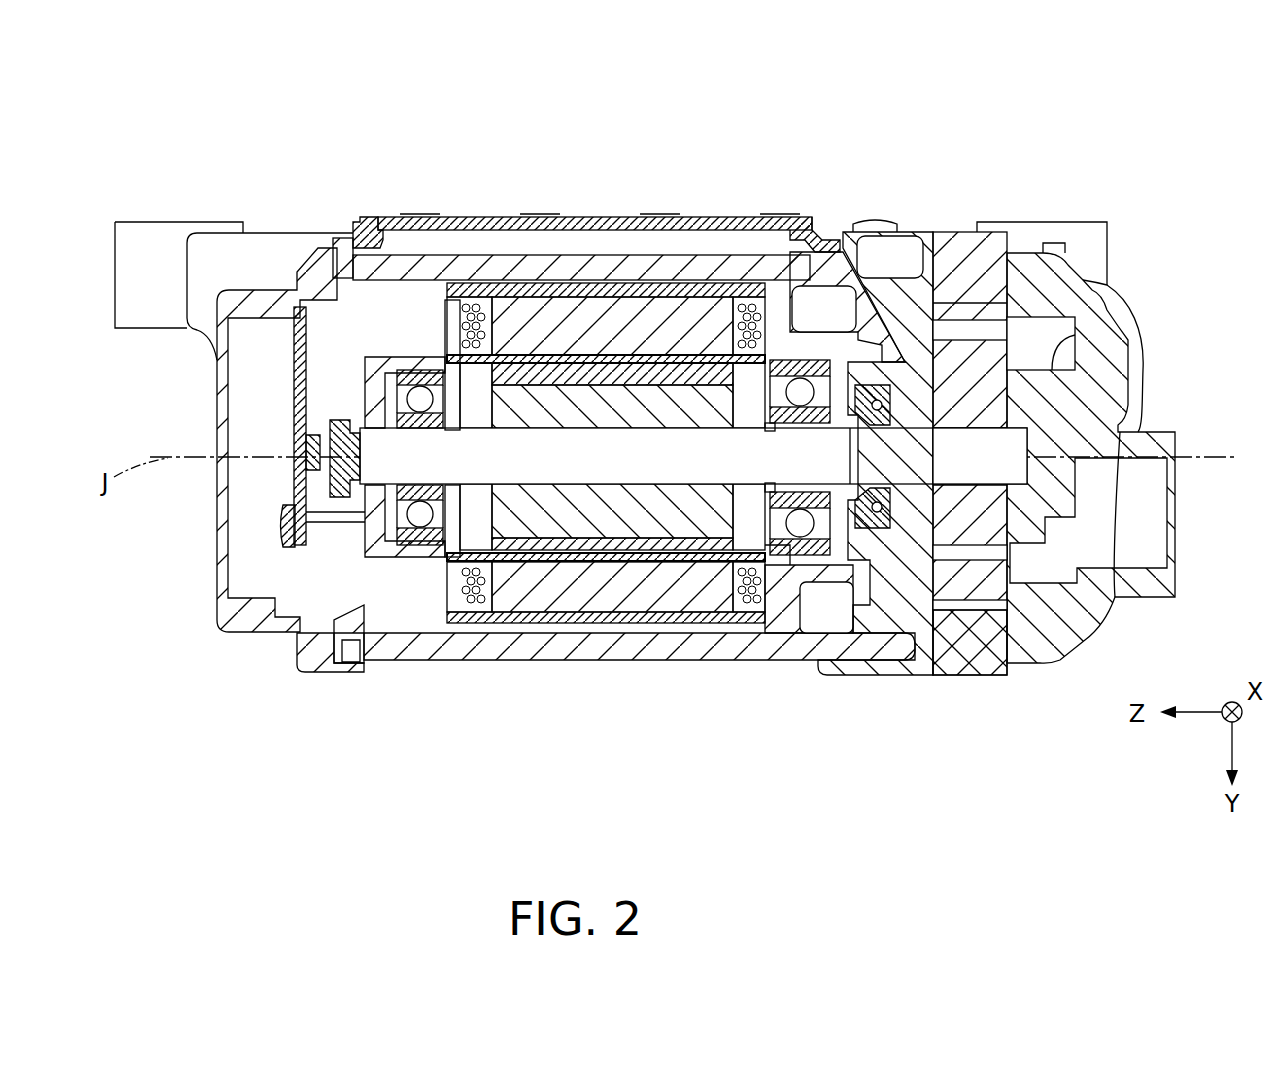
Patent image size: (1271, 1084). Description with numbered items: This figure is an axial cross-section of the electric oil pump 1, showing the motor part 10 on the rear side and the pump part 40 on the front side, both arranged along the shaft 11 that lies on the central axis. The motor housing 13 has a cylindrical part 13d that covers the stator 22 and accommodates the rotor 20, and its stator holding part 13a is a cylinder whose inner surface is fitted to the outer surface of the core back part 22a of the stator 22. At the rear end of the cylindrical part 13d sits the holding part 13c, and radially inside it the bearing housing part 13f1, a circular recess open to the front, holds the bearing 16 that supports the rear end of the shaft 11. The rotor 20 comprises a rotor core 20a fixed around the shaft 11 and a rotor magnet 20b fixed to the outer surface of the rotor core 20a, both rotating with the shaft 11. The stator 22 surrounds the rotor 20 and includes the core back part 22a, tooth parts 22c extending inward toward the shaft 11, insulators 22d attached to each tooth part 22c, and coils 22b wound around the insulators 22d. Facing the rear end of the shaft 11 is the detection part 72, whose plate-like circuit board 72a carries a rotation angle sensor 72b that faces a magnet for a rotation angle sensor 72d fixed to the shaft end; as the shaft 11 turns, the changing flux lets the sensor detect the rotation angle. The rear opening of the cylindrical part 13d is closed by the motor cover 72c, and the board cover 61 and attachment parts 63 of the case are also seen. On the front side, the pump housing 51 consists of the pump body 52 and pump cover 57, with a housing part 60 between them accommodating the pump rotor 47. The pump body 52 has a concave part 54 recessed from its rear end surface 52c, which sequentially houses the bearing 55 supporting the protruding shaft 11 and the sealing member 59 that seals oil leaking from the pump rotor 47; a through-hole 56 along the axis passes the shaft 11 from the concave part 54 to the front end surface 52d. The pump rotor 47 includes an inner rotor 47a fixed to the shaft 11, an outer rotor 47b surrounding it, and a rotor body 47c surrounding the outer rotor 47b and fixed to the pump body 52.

The electric oil pump 1 is at (1133, 135).
The motor part 10 is at (602, 703).
The shaft 11 is at (903, 440).
The motor housing 13 is at (445, 660).
The stator holding part 13a is at (582, 660).
The holding part 13c is at (408, 660).
The cylindrical part 13d is at (505, 262).
The bearing housing part 13f1 is at (370, 660).
The bearing 16 is at (425, 512).
The rotor 20 is at (638, 402).
The rotor core 20a is at (572, 400).
The rotor magnet 20b is at (688, 378).
The stator 22 is at (648, 606).
The core back part 22a is at (553, 640).
The coil 22b is at (745, 605).
The tooth part 22c is at (690, 600).
The insulator 22d is at (515, 630).
The pump part 40 is at (994, 708).
The pump rotor 47 is at (1018, 618).
The inner rotor 47a is at (1045, 532).
The outer rotor 47b is at (974, 600).
The rotor body 47c is at (945, 650).
The pump housing 51 is at (972, 178).
The pump body 52 is at (905, 698).
The end surface 52c is at (770, 570).
The end surface 52d is at (948, 390).
The concave part 54 is at (830, 548).
The bearing 55 is at (800, 538).
The through-hole 56 is at (910, 448).
The pump cover 57 is at (1078, 695).
The sealing member 59 is at (862, 532).
The housing part 60 is at (1008, 662).
The board cover 61 is at (455, 217).
The attachment part 63 is at (120, 233).
The detection part 72 is at (282, 381).
The circuit board 72a is at (298, 412).
The rotation angle sensor 72b is at (310, 448).
The motor cover 72c is at (228, 630).
The magnet for a rotation angle sensor 72d is at (335, 462).